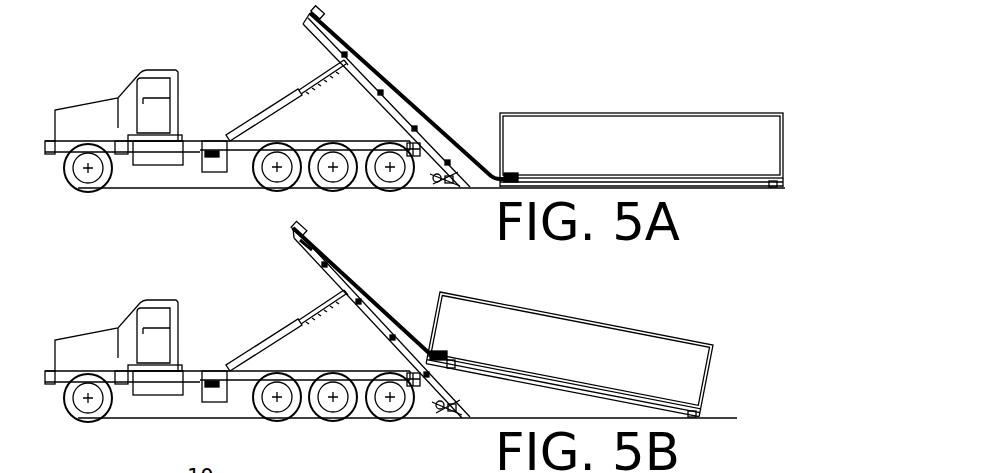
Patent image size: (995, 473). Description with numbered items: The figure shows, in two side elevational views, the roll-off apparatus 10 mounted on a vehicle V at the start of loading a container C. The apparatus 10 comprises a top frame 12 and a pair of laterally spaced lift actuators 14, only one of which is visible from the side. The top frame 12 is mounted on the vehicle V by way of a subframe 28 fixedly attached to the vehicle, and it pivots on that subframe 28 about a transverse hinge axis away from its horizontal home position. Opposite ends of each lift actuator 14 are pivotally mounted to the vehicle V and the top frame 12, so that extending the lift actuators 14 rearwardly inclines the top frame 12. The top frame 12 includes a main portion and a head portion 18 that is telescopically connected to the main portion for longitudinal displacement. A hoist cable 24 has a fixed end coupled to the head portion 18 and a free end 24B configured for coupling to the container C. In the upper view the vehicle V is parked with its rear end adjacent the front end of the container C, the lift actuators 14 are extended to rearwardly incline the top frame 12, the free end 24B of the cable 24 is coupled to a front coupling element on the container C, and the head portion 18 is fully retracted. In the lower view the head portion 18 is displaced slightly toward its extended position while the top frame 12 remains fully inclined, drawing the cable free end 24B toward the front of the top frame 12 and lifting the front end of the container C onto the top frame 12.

In FIG. 5A, the roll-off apparatus 10 is at (404, 53).
In FIG. 5B, the roll-off apparatus 10 is at (408, 295).
In FIG. 5A, the top frame 12 is at (383, 106).
In FIG. 5B, the top frame 12 is at (383, 336).
In FIG. 5A, the lift actuators 14 is at (283, 100).
In FIG. 5B, the lift actuators 14 is at (273, 333).
In FIG. 5B, the head portion 18 is at (310, 250).
In FIG. 5A, the hoist cable 24 is at (407, 100).
In FIG. 5B, the hoist cable 24 is at (380, 297).
In FIG. 5A, the free end 24B is at (509, 170).
In FIG. 5B, the free end 24B is at (437, 353).
In FIG. 5A, the subframe 28 is at (293, 138).
In FIG. 5B, the subframe 28 is at (305, 362).
In FIG. 5A, the vehicle V is at (80, 107).
In FIG. 5B, the vehicle V is at (385, 361).
In FIG. 5A, the container C is at (672, 159).
In FIG. 5B, the container C is at (634, 369).